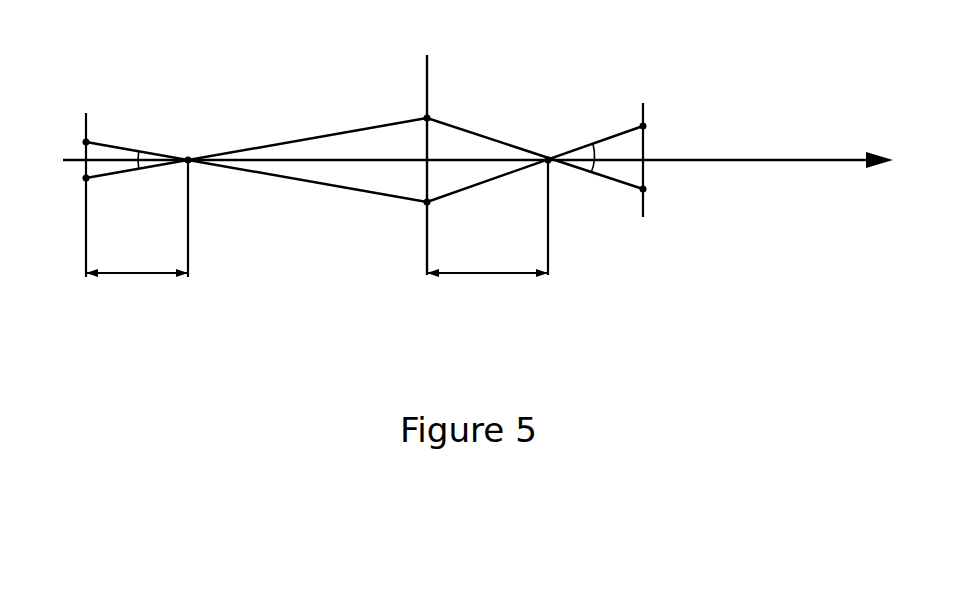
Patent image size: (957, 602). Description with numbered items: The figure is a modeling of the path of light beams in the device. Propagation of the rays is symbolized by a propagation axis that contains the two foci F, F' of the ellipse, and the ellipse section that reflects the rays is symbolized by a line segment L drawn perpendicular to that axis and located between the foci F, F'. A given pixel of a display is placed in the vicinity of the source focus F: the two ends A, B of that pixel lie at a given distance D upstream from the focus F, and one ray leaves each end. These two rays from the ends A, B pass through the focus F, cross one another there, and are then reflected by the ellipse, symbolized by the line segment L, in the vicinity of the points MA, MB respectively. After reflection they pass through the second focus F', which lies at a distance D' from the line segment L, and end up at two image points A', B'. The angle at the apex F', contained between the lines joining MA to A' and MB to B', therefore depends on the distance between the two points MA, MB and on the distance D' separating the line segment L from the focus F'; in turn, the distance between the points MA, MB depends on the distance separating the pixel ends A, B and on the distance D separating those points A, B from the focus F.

The end of pixel B is at (74, 141).
The end of pixel A is at (75, 184).
The source focus F is at (188, 201).
The distance D is at (137, 259).
The line segment L is at (427, 68).
The reflection point MA is at (447, 109).
The reflection point MB is at (447, 216).
The image focus F' is at (552, 200).
The distance D' is at (487, 259).
The image point B' is at (660, 125).
The image point A' is at (660, 190).